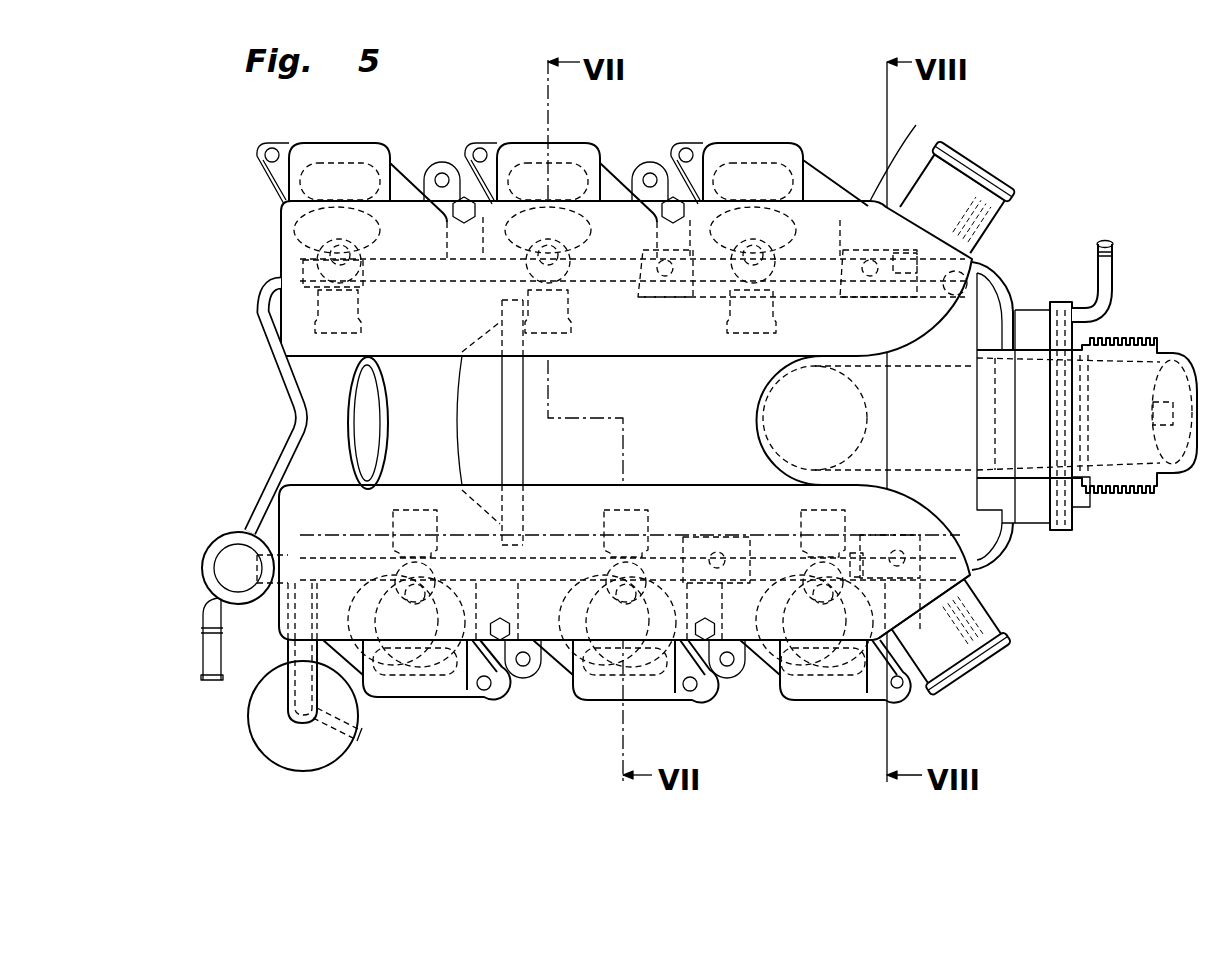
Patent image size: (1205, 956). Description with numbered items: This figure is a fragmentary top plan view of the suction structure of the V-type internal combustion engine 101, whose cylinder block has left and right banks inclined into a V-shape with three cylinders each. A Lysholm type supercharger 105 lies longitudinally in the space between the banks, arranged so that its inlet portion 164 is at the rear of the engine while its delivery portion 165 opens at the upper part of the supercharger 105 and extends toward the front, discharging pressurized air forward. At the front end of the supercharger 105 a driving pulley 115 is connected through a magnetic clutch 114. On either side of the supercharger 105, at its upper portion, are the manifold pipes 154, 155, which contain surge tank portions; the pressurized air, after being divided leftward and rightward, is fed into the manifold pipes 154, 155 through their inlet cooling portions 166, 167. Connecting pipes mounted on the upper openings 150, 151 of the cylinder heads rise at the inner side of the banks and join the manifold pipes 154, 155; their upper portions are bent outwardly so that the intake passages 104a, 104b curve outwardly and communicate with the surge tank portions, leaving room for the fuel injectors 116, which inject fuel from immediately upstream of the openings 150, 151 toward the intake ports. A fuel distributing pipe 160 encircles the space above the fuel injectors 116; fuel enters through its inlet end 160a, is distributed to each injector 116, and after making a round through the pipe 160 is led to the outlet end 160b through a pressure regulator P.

The V-type internal combustion engine 101 is at (1034, 167).
The intake passage 104a is at (413, 667).
The intake passage 104b is at (352, 177).
The Lysholm type supercharger 105 is at (710, 418).
The magnetic clutch 114 is at (1037, 527).
The driving pulley 115 is at (1122, 490).
The fuel injector 116 is at (337, 267).
The upper opening 150 is at (425, 645).
The upper opening 151 is at (307, 219).
The manifold pipe 154 is at (927, 587).
The manifold pipe 155 is at (911, 151).
The fuel distributing pipe 160 is at (297, 455).
The inlet end 160a is at (200, 680).
The outlet end 160b is at (355, 733).
The inlet portion 164 is at (363, 407).
The delivery portion 165 is at (850, 413).
The inlet cooling portion 166 is at (977, 677).
The inlet cooling portion 167 is at (983, 153).
The pressure regulator P is at (257, 723).